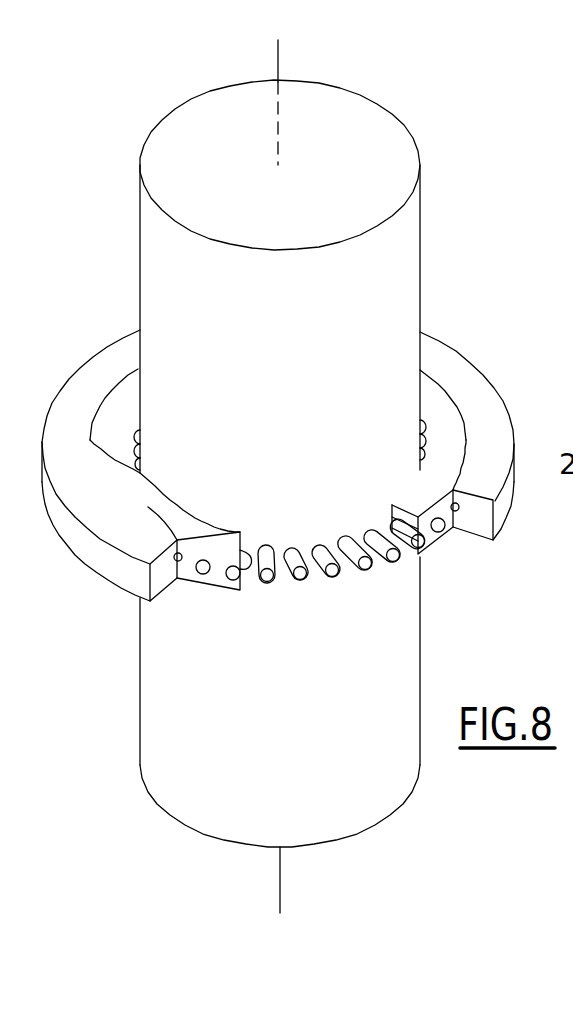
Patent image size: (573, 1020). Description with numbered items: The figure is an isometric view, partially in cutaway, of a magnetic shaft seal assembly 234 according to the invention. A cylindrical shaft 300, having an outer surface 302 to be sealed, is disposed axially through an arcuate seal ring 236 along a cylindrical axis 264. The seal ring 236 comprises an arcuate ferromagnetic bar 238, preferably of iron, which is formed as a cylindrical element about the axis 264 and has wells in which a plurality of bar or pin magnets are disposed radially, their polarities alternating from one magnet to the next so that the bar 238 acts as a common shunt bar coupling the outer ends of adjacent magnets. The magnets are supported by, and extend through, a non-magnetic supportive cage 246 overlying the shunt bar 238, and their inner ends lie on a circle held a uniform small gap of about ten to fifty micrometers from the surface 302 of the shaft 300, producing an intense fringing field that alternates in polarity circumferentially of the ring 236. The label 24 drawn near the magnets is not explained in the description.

The cylindrical axis 264 is at (279, 63).
The cylindrical shaft 300 is at (378, 180).
The outer surface 302 is at (400, 398).
The arcuate seal ring 236 is at (147, 457).
The shaft seal assembly 234 is at (464, 416).
The arcuate ferromagnetic bar 238 is at (160, 568).
The non-magnetic supportive cage 246 is at (425, 530).
The magnets 24 is at (335, 578).